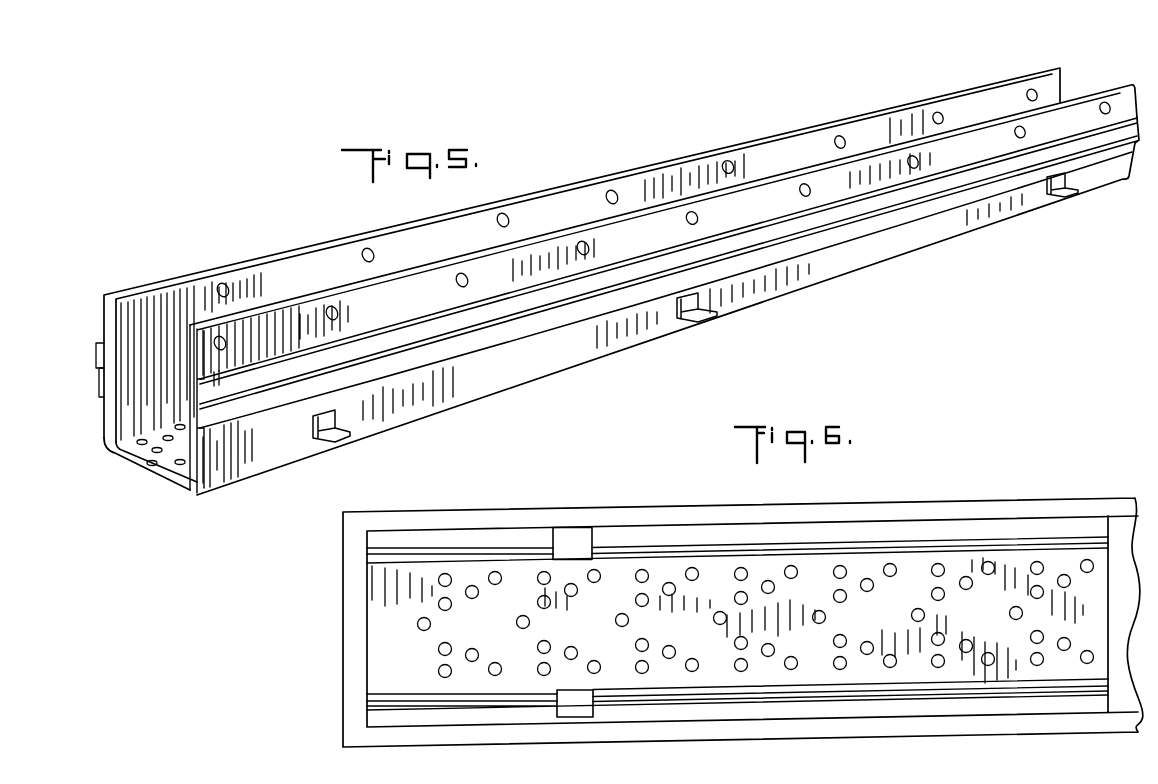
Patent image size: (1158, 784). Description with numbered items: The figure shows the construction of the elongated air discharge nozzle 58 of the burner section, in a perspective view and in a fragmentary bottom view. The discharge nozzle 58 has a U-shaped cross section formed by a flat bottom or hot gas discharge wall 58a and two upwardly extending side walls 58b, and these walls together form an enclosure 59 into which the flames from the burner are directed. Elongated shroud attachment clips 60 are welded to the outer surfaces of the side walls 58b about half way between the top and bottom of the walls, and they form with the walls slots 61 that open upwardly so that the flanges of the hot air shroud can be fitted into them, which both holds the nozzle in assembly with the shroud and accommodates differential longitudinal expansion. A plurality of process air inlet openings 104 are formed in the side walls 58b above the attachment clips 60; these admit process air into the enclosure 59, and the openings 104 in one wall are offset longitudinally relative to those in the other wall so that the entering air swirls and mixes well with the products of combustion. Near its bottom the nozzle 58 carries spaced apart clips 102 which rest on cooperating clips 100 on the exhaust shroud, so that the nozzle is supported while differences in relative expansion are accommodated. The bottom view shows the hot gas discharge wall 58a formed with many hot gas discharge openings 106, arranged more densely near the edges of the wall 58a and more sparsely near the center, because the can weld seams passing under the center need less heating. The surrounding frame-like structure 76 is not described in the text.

In FIG. 5, the air discharge nozzle 58 is at (104, 262).
In FIG. 6, the air discharge nozzle 58 is at (688, 540).
In FIG. 5, the hot gas discharge wall 58a is at (122, 457).
In FIG. 6, the hot gas discharge wall 58a is at (382, 618).
In FIG. 5, the side walls 58b is at (112, 418).
In FIG. 5, the enclosure 59 is at (158, 323).
In FIG. 5, the shroud attachment clips 60 is at (101, 387).
In FIG. 6, the shroud attachment clips 60 is at (737, 623).
In FIG. 5, the slots 61 is at (100, 347).
In FIG. 6, the frame 76 is at (471, 512).
In FIG. 6, the clips 100 is at (577, 542).
In FIG. 5, the clips 102 is at (337, 440).
In FIG. 5, the process air inlet openings 104 is at (252, 287).
In FIG. 5, the hot gas discharge openings 106 is at (178, 426).
In FIG. 6, the hot gas discharge openings 106 is at (497, 666).